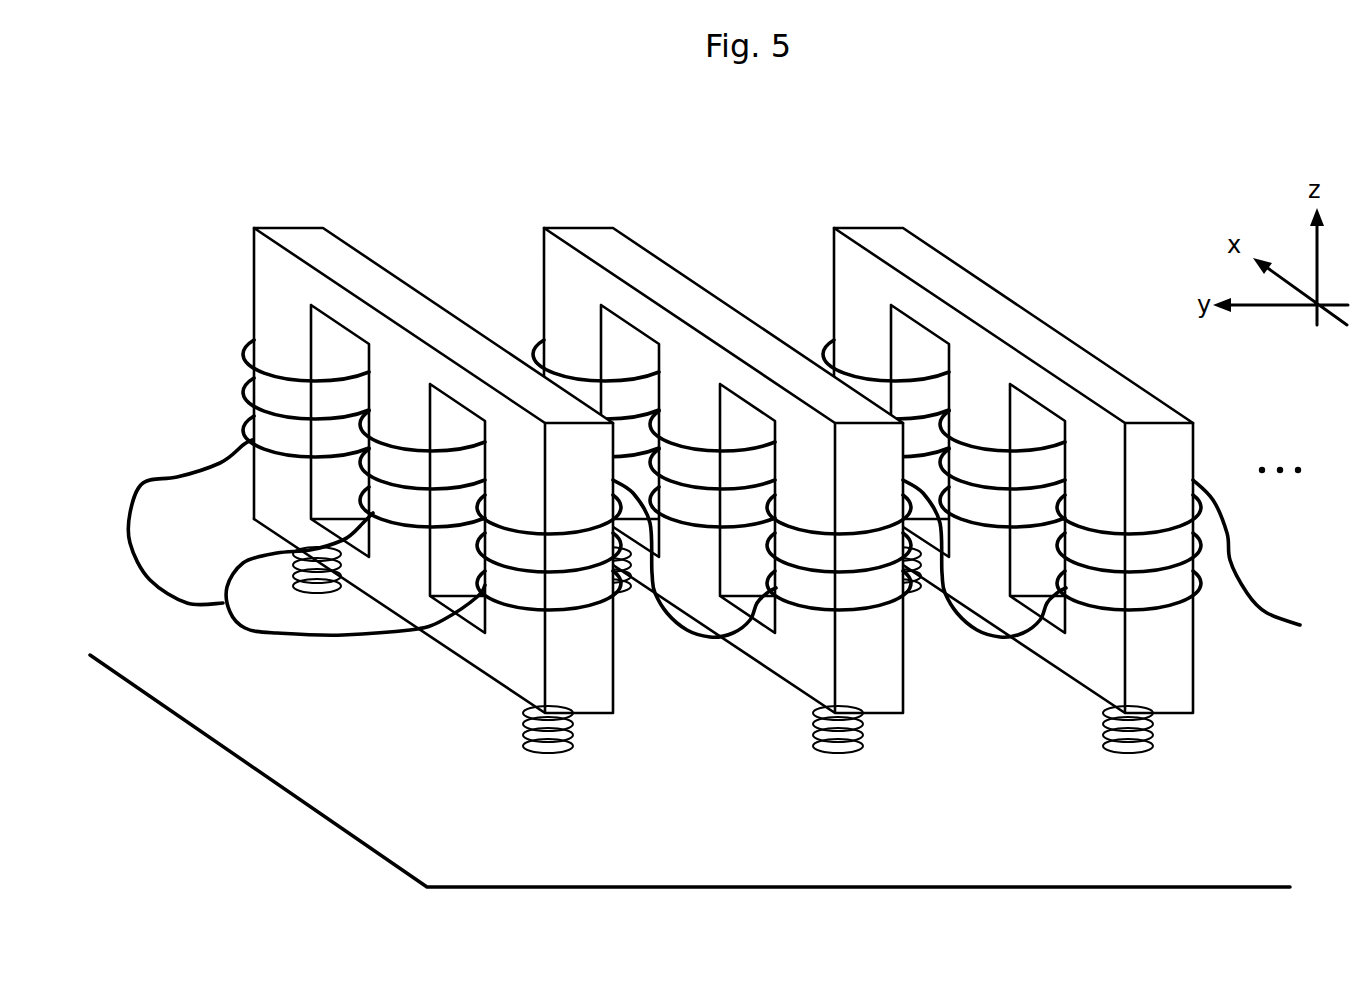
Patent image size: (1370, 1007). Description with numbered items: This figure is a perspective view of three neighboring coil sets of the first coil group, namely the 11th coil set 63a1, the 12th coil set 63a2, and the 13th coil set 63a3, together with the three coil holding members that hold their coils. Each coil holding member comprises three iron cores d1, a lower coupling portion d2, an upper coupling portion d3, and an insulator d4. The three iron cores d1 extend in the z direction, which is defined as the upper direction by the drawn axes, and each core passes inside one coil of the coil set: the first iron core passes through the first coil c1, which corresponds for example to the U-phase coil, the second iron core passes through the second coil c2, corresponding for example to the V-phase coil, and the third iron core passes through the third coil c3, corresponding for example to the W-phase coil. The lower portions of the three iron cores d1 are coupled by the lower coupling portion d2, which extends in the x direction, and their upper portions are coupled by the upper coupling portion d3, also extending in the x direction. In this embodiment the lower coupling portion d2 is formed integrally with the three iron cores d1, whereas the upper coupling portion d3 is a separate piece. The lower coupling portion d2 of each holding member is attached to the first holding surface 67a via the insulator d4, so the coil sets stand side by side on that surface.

The 11th coil set 63a1 is at (408, 170).
The 12th coil set 63a2 is at (708, 170).
The 13th coil set 63a3 is at (1008, 170).
The iron core d1 is at (511, 448).
The lower coupling portion d2 is at (467, 643).
The upper coupling portion d3 is at (333, 250).
The insulator d4 is at (313, 593).
The first coil c1 is at (583, 612).
The second coil c2 is at (410, 540).
The third coil c3 is at (247, 382).
The first holding surface 67a is at (1165, 888).